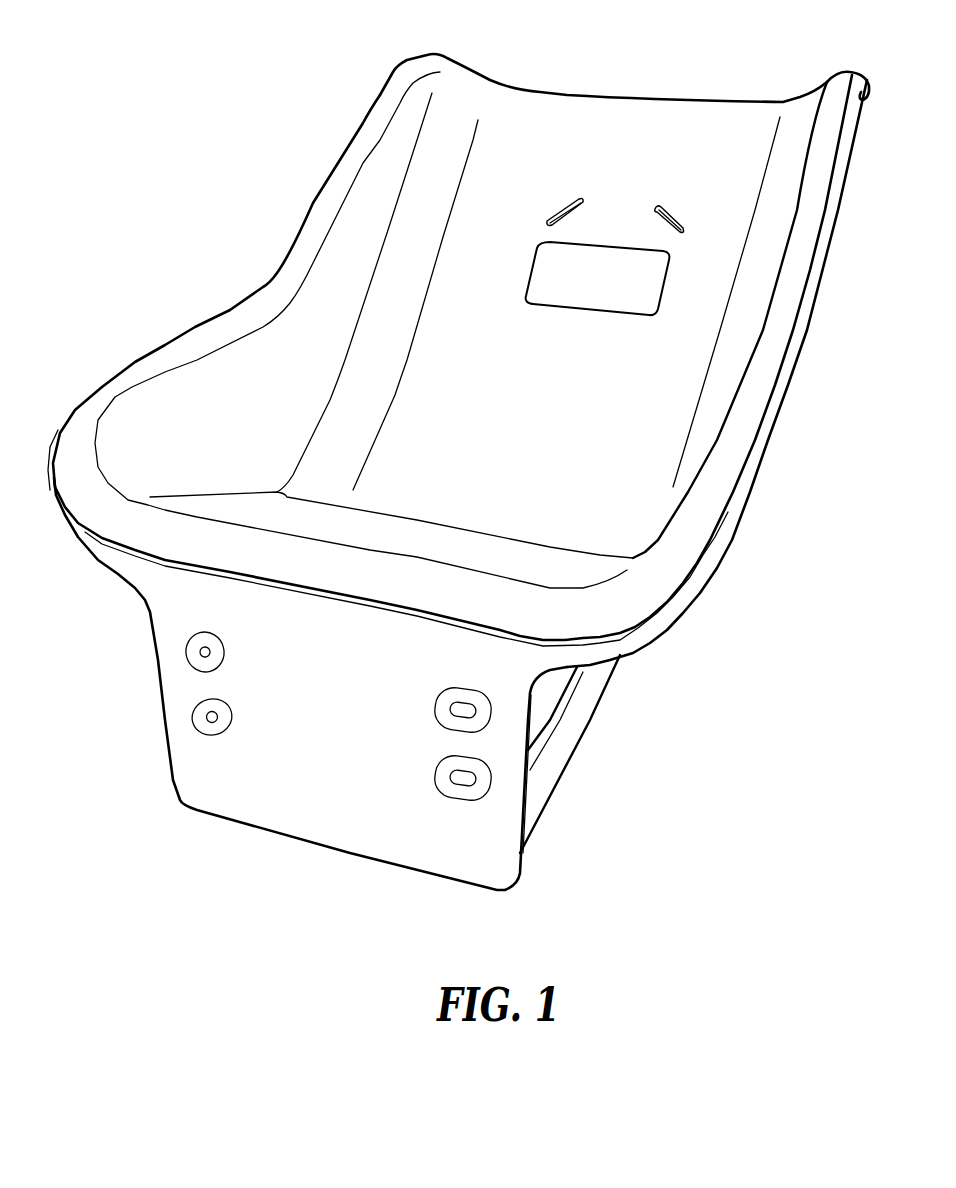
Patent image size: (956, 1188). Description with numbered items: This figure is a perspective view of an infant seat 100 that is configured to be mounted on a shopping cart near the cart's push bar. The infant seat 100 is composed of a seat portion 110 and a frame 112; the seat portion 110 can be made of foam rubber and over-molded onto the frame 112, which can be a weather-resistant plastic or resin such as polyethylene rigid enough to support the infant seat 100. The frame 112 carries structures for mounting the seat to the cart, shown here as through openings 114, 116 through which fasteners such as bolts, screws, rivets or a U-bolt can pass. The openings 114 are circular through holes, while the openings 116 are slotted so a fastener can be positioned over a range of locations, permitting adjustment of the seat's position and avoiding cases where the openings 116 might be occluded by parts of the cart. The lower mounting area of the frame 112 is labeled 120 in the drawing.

The infant seat 100 is at (458, 460).
The seat portion 110 is at (572, 132).
The frame 112 is at (180, 602).
The through openings 114 is at (203, 710).
The through openings 116 is at (457, 775).
The base 120 is at (203, 753).